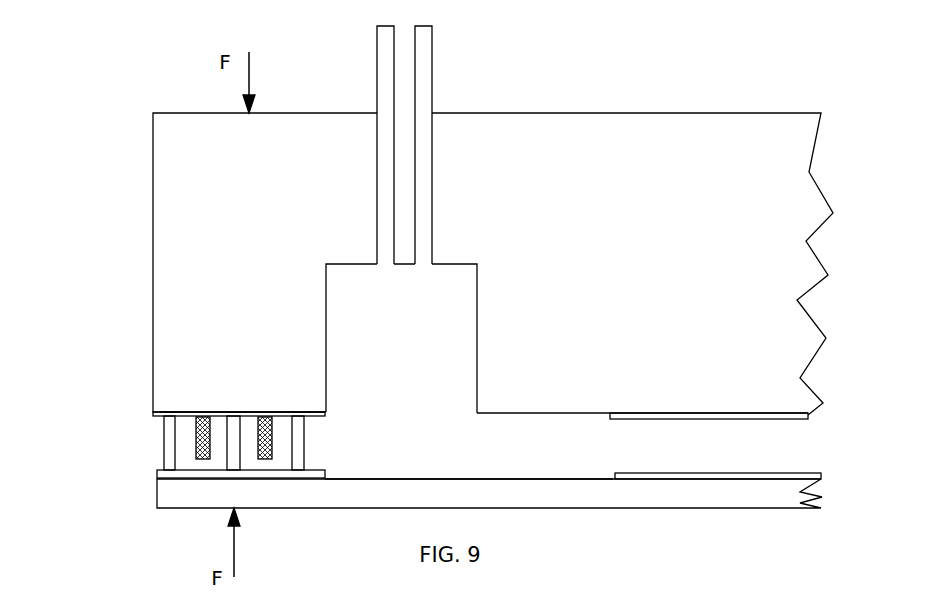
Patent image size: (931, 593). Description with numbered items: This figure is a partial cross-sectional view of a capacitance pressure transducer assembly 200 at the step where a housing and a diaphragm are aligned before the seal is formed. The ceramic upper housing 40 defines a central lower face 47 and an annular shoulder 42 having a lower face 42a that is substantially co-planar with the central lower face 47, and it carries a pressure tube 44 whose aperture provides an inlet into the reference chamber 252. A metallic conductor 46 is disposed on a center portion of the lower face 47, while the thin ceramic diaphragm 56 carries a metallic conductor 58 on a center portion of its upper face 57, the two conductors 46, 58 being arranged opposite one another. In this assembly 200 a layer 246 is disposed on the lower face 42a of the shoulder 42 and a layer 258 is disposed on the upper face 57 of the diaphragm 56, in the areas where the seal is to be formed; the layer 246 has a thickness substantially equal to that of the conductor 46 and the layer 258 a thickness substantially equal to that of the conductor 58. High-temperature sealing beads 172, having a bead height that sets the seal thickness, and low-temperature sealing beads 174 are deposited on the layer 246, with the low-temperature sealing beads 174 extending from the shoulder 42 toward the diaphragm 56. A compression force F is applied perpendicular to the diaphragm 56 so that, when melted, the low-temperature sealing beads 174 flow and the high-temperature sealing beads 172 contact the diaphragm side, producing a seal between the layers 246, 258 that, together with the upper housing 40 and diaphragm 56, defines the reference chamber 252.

The capacitance pressure transducer assembly 200 is at (125, 122).
The upper housing 40 is at (277, 174).
The annular shoulder 42 is at (234, 329).
The lower face of the annular shoulder 42a is at (182, 412).
The pressure tube 44 is at (427, 62).
The metallic conductor 46 is at (808, 420).
The central lower face 47 is at (543, 414).
The diaphragm 56 is at (455, 506).
The upper face of the diaphragm 57 is at (413, 478).
The metallic conductor 58 is at (822, 475).
The high-temperature sealing beads 172 is at (205, 420).
The low-temperature sealing beads 174 is at (165, 435).
The layer 246 is at (153, 413).
The reference chamber 252 is at (394, 346).
The layer 258 is at (157, 473).